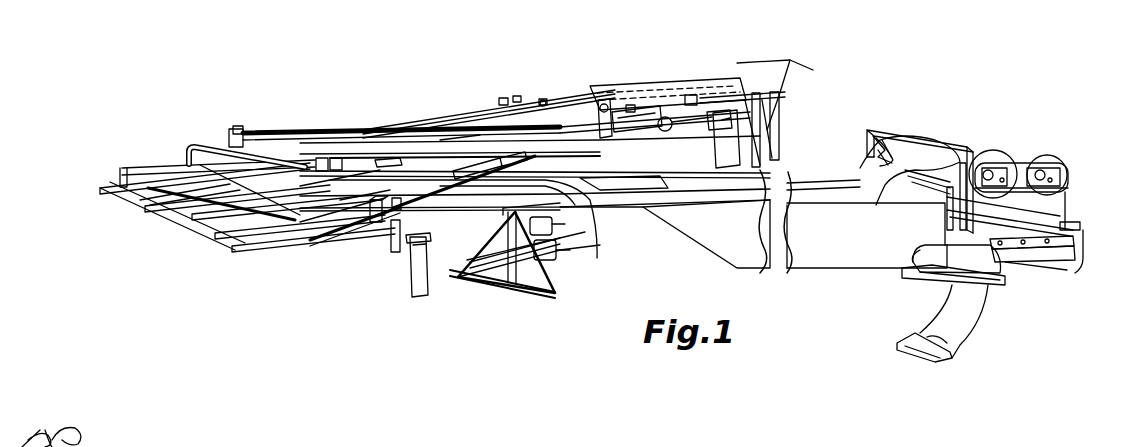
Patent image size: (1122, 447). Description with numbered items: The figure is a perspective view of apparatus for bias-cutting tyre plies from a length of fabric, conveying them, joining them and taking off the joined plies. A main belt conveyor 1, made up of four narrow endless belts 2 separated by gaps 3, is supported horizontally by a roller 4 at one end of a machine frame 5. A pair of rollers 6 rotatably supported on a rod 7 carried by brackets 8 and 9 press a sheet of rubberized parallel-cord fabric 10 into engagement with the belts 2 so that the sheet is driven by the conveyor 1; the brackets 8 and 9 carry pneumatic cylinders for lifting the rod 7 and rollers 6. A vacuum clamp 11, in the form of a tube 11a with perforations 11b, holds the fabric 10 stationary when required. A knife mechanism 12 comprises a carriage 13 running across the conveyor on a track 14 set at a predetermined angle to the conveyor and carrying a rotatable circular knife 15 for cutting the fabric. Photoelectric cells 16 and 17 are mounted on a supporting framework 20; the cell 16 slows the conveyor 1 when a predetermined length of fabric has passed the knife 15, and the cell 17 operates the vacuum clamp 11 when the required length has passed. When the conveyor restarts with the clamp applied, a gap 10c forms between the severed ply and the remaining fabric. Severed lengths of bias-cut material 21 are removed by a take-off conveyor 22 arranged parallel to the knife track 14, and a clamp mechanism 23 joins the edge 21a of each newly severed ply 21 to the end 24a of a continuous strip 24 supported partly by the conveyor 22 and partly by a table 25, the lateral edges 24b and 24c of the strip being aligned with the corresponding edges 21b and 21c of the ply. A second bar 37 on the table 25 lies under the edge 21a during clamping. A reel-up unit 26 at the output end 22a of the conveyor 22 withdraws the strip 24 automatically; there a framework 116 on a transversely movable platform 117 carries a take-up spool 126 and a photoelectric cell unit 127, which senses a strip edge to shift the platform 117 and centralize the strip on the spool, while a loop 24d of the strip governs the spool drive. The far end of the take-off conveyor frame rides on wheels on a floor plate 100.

The main belt conveyor 1 is at (465, 104).
The endless belt 2 is at (168, 207).
The gap 3 is at (153, 200).
The roller 4 is at (699, 139).
The machine frame 5 is at (372, 230).
The roller 6 is at (543, 100).
The rod 7 is at (516, 96).
The bracket 8 is at (712, 113).
The bracket 9 is at (502, 99).
The sheet of rubberized parallel-cord fabric 10 is at (673, 67).
The gap 10c is at (387, 162).
The vacuum clamp 11 is at (720, 97).
The tube 11a is at (793, 94).
The perforations 11b is at (690, 96).
The knife mechanism 12 is at (640, 117).
The carriage 13 is at (601, 117).
The track 14 is at (270, 138).
The circular knife 15 is at (660, 183).
The photoelectric cell 16 is at (332, 160).
The photoelectric cell 17 is at (323, 160).
The supporting framework 20 is at (207, 148).
The length of bias-cut material 21 is at (313, 187).
The edge 21a is at (440, 207).
The edge 21b is at (380, 180).
The edge 21c is at (352, 178).
The take-off conveyor 22 is at (737, 202).
The output end 22a is at (793, 187).
The clamp mechanism 23 is at (410, 273).
The continuous strip 24 is at (500, 190).
The end 24a is at (450, 230).
The lateral edge 24b is at (503, 190).
The lateral edge 24c is at (483, 222).
The loop 24d is at (877, 177).
The table 25 is at (485, 193).
The reel-up unit 26 is at (934, 133).
The second bar 37 is at (391, 222).
The floor plate 100 is at (967, 320).
The framework 116 is at (1068, 192).
The platform 117 is at (1080, 250).
The take-up spool 126 is at (993, 152).
The photoelectric cell unit 127 is at (880, 135).